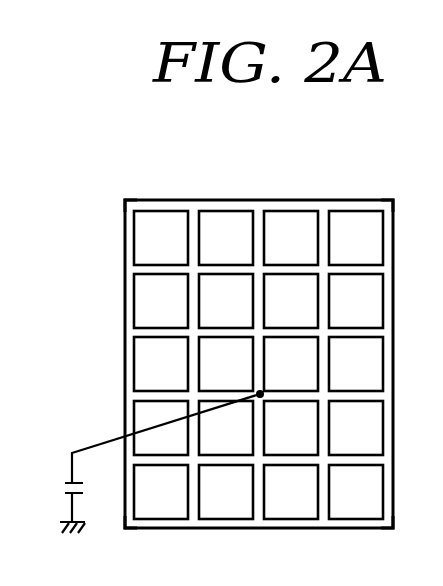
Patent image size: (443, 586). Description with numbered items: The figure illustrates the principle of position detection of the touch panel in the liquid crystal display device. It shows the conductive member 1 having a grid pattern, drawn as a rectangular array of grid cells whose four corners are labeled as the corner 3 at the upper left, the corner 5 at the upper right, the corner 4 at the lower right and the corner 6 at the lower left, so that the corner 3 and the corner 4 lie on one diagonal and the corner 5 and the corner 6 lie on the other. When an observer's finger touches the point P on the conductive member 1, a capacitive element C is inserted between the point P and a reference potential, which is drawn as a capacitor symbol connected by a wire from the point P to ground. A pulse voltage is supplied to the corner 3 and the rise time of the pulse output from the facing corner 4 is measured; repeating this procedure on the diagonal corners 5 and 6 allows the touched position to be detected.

The conductive member 1 is at (281, 197).
The corner 3 is at (119, 188).
The corner 4 is at (399, 540).
The corner 5 is at (400, 188).
The corner 6 is at (118, 542).
The point P is at (279, 372).
The capacitive element C is at (144, 463).